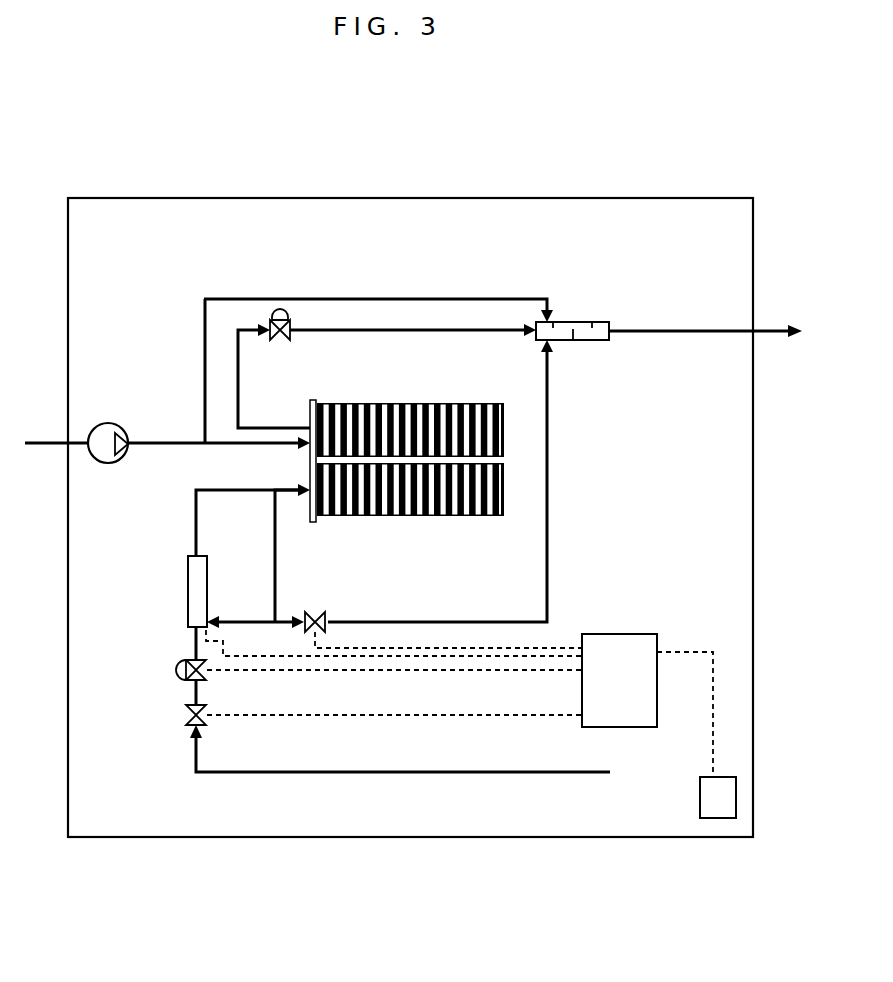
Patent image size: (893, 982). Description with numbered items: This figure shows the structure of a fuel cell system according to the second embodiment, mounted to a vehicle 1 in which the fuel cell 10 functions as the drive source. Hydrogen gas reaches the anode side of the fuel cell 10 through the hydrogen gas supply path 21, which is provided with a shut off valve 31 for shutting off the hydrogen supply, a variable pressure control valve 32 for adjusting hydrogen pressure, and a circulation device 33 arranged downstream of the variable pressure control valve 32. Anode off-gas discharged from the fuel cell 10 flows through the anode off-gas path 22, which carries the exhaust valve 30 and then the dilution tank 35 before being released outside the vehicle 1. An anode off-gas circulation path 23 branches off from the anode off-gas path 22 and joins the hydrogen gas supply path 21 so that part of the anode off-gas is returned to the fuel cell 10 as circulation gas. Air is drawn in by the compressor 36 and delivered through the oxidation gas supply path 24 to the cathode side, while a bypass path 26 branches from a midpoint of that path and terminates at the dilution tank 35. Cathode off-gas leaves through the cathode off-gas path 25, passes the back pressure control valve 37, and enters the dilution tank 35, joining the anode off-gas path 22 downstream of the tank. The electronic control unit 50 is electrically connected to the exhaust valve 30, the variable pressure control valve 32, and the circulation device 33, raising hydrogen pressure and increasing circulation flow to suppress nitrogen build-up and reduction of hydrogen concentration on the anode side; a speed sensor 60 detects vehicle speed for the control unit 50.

The vehicle 1 is at (617, 198).
The fuel cell 10 is at (429, 518).
The hydrogen gas supply path 21 is at (350, 774).
The anode off-gas path 22 is at (655, 333).
The anode off-gas circulation path 23 is at (244, 622).
The oxidation gas supply path 24 is at (159, 442).
The cathode off-gas path 25 is at (355, 330).
The bypass path 26 is at (424, 299).
The exhaust valve 30 is at (316, 618).
The shut off valve 31 is at (186, 715).
The variable pressure control valve 32 is at (179, 670).
The circulation device 33 is at (188, 588).
The dilution tank 35 is at (574, 322).
The compressor 36 is at (106, 440).
The back pressure control valve 37 is at (280, 308).
The electronic control unit (ECU) 50 is at (625, 634).
The speed sensor 60 is at (700, 793).